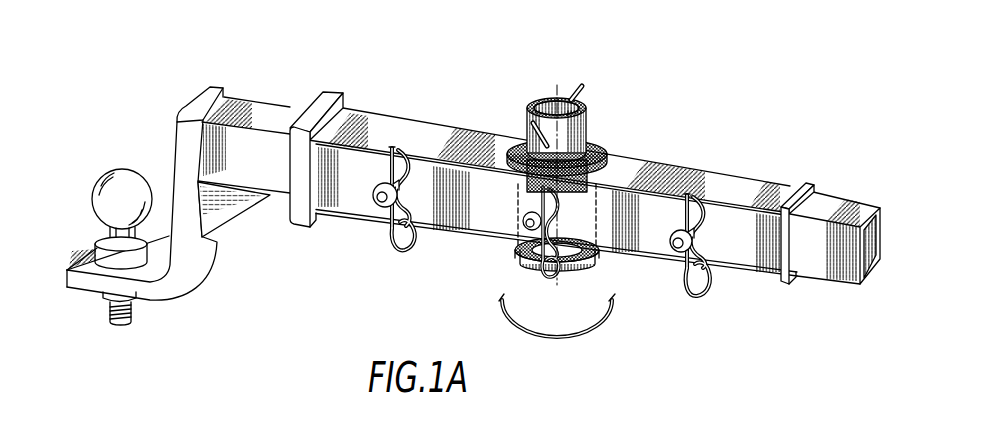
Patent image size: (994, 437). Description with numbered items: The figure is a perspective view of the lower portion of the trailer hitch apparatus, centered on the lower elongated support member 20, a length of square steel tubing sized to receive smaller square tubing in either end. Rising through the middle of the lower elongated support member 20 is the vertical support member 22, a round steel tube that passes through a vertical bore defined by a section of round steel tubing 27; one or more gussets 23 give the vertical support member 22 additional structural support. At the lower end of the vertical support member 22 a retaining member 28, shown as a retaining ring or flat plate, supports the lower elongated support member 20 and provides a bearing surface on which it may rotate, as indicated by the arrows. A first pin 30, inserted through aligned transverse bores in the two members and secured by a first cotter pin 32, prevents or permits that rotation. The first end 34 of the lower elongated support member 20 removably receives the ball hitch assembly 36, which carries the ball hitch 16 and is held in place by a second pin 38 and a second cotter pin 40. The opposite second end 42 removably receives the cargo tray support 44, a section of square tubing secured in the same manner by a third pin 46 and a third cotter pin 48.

The ball hitch 16 is at (122, 171).
The lower elongated support member 20 is at (735, 172).
The vertical support member 22 is at (590, 133).
The gusset 23 is at (575, 89).
The round steel tubing 27 is at (522, 138).
The retaining member 28 is at (532, 266).
The first pin 30 is at (523, 224).
The first cotter pin 32 is at (549, 277).
The first end 34 is at (297, 229).
The ball hitch assembly 36 is at (250, 74).
The second pin 38 is at (380, 207).
The second cotter pin 40 is at (402, 252).
The second end 42 is at (790, 283).
The cargo tray support 44 is at (847, 208).
The third pin 46 is at (677, 253).
The third cotter pin 48 is at (700, 300).